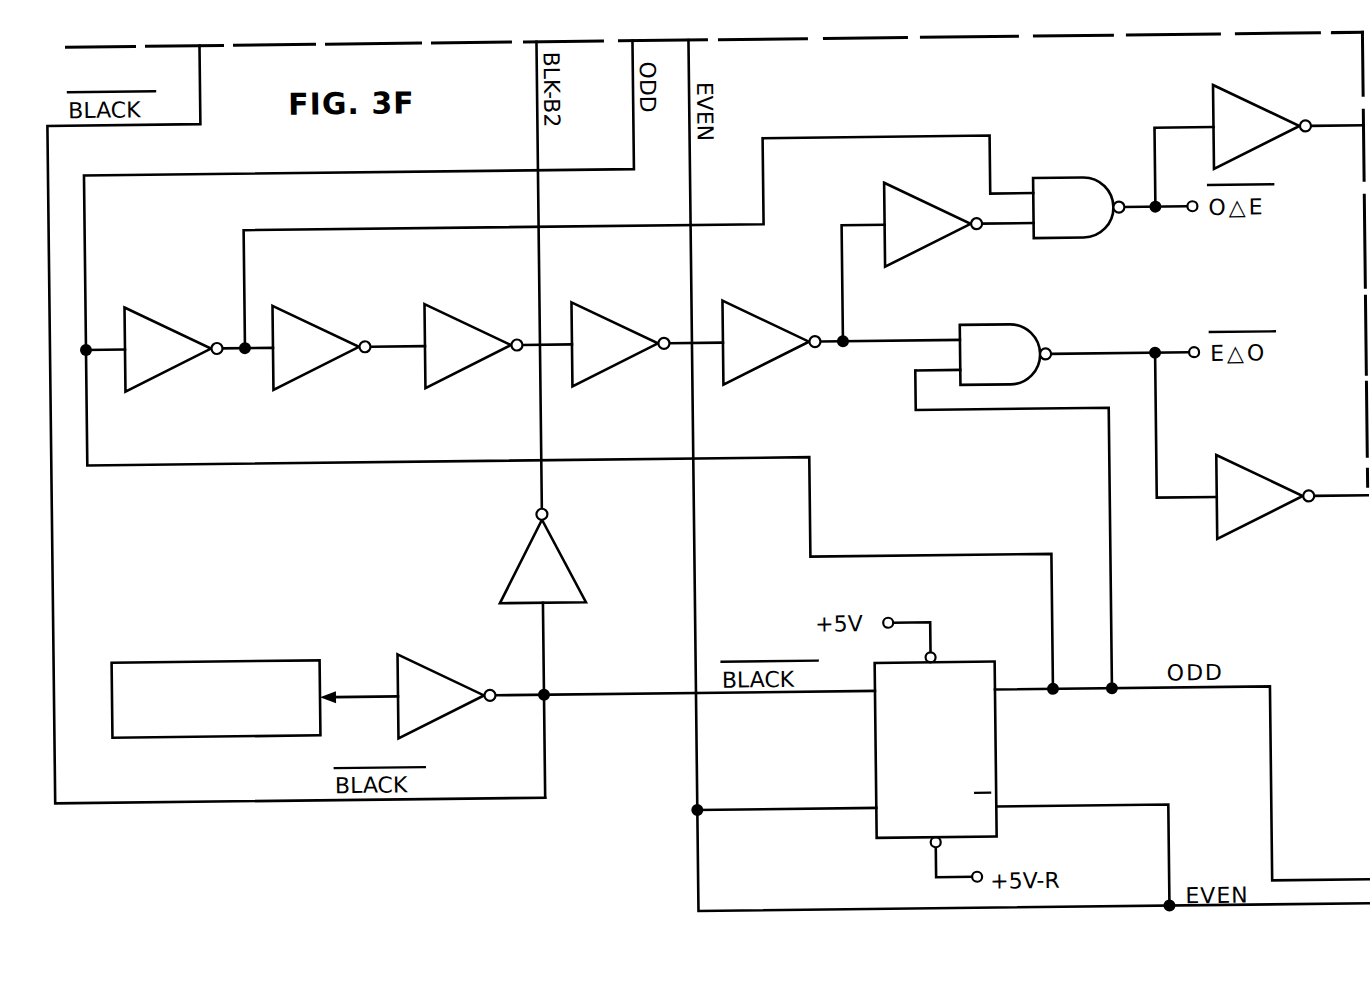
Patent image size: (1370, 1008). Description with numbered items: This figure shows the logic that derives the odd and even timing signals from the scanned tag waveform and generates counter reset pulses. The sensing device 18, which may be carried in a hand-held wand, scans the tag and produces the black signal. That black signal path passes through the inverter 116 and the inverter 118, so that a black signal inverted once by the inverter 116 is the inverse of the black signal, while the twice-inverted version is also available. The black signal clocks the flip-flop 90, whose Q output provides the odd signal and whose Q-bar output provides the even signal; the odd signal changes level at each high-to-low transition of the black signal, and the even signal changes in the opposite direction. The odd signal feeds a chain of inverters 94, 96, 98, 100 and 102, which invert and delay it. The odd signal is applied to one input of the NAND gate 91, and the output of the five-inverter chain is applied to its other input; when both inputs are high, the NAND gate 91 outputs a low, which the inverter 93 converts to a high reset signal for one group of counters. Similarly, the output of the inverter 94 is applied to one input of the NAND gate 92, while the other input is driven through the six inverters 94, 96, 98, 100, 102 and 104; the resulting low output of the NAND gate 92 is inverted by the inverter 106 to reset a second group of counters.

The sensing device 18 is at (206, 663).
The flip-flop 90 is at (965, 672).
The NAND gate 91 is at (972, 335).
The NAND gate 92 is at (1086, 189).
The inverter 93 is at (1247, 482).
The inverter 94 is at (189, 337).
The inverter 96 is at (337, 337).
The inverter 98 is at (489, 337).
The inverter 100 is at (655, 272).
The inverter 102 is at (782, 333).
The inverter 104 is at (886, 200).
The inverter 106 is at (1216, 111).
The inverter 116 is at (423, 672).
The inverter 118 is at (563, 567).